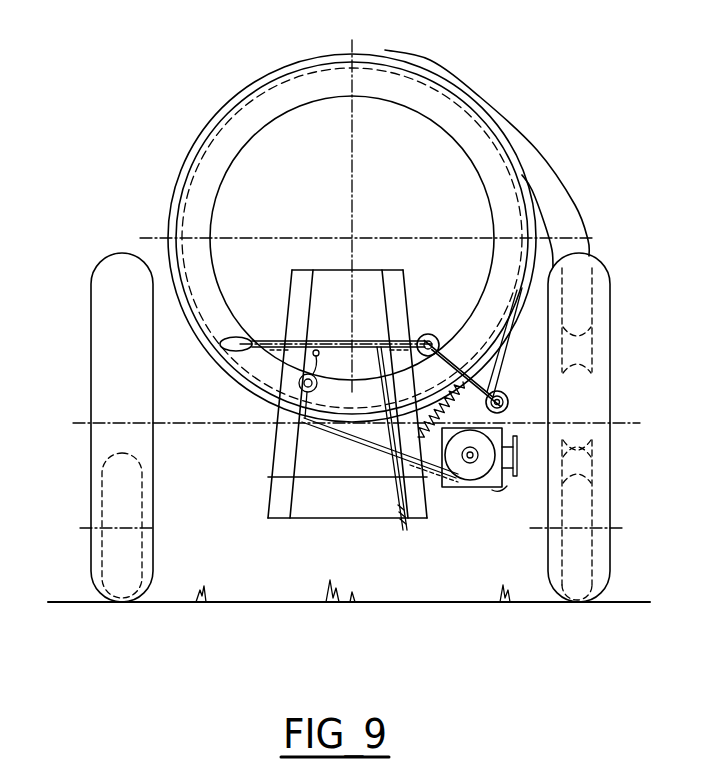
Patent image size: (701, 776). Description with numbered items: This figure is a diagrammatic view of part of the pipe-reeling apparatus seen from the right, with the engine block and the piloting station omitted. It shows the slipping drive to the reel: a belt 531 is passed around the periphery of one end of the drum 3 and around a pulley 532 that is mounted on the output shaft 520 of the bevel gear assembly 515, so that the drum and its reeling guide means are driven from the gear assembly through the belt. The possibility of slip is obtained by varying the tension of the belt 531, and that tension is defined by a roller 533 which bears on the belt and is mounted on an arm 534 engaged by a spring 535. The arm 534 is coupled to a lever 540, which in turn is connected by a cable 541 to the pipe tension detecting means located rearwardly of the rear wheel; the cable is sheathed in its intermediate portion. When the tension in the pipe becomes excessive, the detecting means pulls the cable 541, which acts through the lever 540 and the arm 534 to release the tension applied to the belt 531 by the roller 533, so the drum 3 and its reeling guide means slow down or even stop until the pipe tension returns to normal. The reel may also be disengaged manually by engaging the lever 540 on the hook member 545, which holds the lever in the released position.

The drum 3 is at (288, 85).
The lever 540 is at (333, 341).
The cable 541 is at (378, 372).
The hook member 545 is at (300, 378).
The belt 531 is at (340, 428).
The arm 534 is at (472, 366).
The roller 533 is at (508, 393).
The spring 535 is at (433, 435).
The output shaft 520 is at (462, 486).
The bevel gear assembly 515 is at (505, 488).
The pulley 532 is at (492, 490).